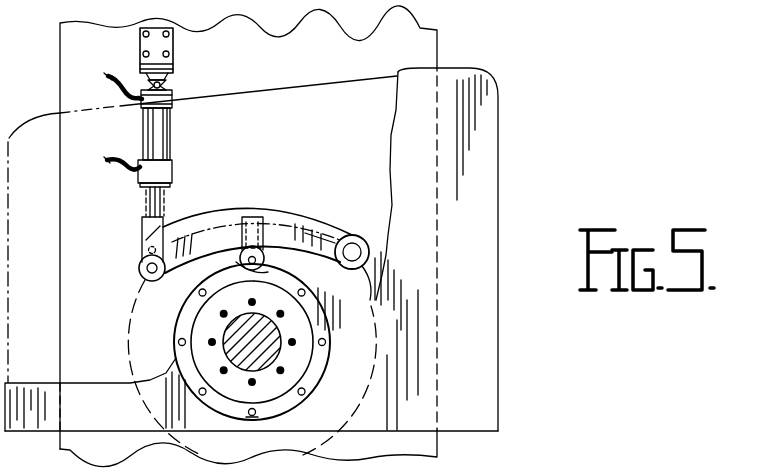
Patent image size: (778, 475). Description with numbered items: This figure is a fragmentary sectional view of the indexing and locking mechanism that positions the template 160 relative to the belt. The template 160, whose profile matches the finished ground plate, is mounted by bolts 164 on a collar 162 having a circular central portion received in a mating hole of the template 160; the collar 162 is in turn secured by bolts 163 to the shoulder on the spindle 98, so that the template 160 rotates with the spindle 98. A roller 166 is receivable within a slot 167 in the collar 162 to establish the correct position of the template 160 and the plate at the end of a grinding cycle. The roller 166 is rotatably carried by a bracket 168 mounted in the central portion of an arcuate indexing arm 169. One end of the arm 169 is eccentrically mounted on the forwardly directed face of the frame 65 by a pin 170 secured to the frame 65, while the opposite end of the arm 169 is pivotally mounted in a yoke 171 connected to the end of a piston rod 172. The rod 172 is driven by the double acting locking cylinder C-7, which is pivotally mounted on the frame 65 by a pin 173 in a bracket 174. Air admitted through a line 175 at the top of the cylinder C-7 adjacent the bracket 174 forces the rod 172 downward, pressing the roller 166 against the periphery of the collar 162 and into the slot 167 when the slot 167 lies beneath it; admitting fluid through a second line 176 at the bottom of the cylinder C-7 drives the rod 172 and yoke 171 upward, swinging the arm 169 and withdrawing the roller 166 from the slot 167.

The frame 65 is at (440, 52).
The template 160 is at (500, 200).
The collar 162 is at (182, 304).
The bolts 163 is at (295, 345).
The spindle 98 is at (274, 350).
The bolts 164 is at (305, 391).
The arcuate indexing arm 169 is at (303, 223).
The pin 170 is at (353, 240).
The bracket 168 is at (263, 223).
The roller 166 is at (267, 262).
The slot 167 is at (270, 272).
The yoke 171 is at (143, 228).
The piston rod 172 is at (161, 208).
The double acting locking cylinder C-7 is at (147, 128).
The second line 176 is at (119, 165).
The line 175 is at (109, 80).
The pin 173 is at (168, 88).
The bracket 174 is at (173, 40).